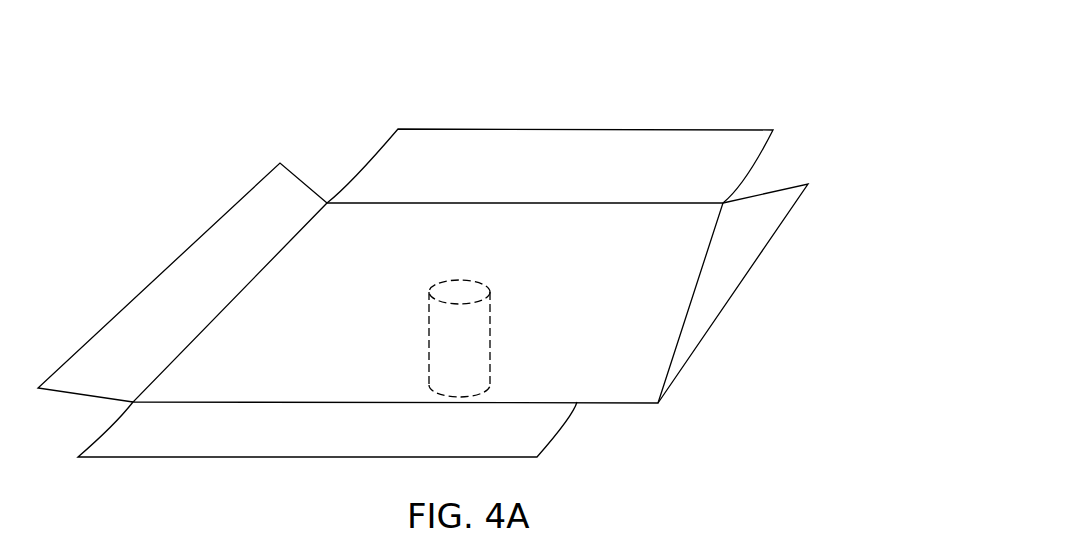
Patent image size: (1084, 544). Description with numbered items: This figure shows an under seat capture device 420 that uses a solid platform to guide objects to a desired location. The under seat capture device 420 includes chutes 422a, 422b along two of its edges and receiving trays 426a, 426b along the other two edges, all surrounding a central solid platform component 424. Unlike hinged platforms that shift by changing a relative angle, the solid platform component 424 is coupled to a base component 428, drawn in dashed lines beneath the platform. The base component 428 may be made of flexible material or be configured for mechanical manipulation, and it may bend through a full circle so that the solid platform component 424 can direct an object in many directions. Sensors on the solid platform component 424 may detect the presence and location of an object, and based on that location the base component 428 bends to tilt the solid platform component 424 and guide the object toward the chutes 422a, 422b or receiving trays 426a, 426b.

The under seat capture device 420 is at (673, 100).
The chute 422a is at (613, 181).
The chute 422b is at (374, 439).
The solid platform component 424 is at (591, 252).
The receiving tray 426a is at (720, 306).
The receiving tray 426b is at (236, 289).
The base component 428 is at (430, 338).